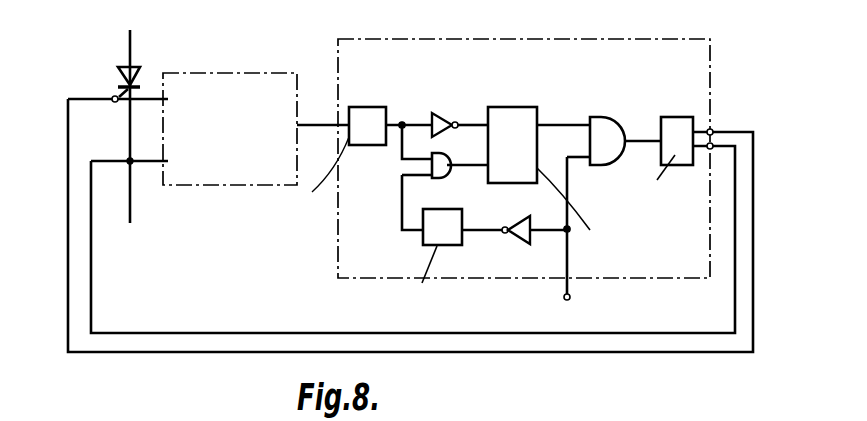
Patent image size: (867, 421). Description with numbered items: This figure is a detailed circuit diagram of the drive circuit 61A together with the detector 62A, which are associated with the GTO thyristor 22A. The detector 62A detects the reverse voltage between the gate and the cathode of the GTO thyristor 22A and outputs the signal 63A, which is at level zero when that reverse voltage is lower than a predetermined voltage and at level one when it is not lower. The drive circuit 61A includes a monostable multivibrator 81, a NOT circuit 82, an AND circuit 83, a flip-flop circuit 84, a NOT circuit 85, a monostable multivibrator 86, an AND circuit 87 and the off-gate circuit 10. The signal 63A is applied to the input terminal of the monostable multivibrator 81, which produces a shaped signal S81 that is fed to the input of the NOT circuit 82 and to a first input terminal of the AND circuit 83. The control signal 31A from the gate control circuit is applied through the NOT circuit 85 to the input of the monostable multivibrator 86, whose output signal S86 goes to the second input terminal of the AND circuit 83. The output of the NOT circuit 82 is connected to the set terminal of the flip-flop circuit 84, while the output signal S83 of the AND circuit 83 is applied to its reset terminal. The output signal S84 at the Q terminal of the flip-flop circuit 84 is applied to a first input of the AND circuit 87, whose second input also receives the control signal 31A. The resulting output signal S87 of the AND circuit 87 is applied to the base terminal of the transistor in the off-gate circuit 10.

The GTO thyristor 22A is at (124, 82).
The detector 62A is at (253, 63).
The signal 63A is at (313, 125).
The drive circuit 61A is at (418, 31).
The monostable multivibrator 81 is at (361, 107).
The shaped signal S81 is at (415, 125).
The NOT circuit 82 is at (437, 113).
The AND circuit 83 is at (428, 163).
The output signal S83 is at (468, 167).
The flip-flop circuit 84 is at (508, 107).
The output signal S84 is at (560, 125).
The NOT circuit 85 is at (518, 243).
The monostable multivibrator 86 is at (452, 245).
The output signal S86 is at (408, 233).
The AND circuit 87 is at (595, 117).
The output signal S87 is at (643, 141).
The off-gate circuit 10 is at (675, 117).
The control signal 31A is at (568, 243).